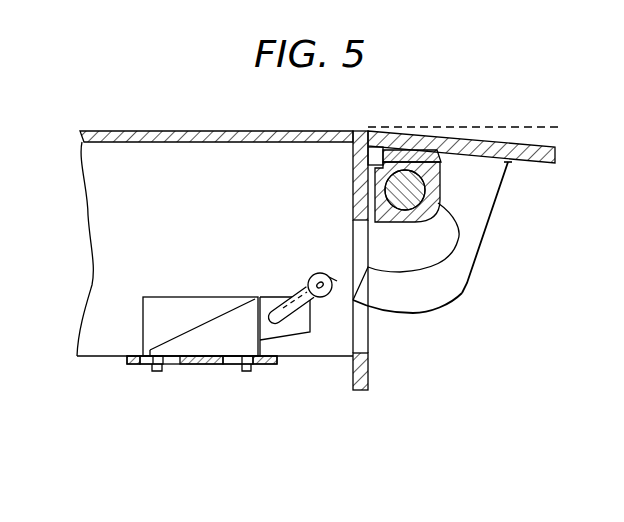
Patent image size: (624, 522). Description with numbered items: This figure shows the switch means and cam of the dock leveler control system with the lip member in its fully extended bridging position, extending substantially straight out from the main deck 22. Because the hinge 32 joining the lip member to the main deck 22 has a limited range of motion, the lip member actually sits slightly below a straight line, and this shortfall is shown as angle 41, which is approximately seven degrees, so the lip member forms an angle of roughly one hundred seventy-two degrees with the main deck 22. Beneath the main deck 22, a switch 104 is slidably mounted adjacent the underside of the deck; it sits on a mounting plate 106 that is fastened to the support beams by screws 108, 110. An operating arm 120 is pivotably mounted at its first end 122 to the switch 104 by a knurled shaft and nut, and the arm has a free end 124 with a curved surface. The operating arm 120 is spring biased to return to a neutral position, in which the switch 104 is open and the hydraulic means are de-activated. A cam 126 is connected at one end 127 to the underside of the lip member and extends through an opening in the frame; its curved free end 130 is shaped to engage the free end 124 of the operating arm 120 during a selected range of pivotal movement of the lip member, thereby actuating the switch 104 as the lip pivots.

The main deck 22 is at (212, 131).
The hinge 32 is at (415, 158).
The angle 41 is at (538, 129).
The switch 104 is at (182, 297).
The mounting plate 106 is at (205, 365).
The screw 108 is at (158, 371).
The screw 110 is at (252, 366).
The operating arm 120 is at (312, 307).
The first end 122 is at (275, 305).
The free end 124 is at (322, 272).
The cam 126 is at (478, 217).
The end 127 is at (508, 162).
The curved free end 130 is at (392, 302).